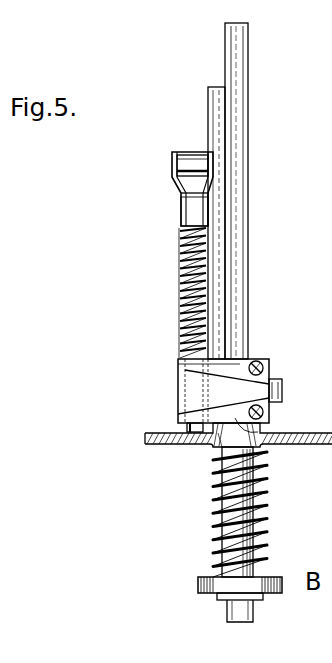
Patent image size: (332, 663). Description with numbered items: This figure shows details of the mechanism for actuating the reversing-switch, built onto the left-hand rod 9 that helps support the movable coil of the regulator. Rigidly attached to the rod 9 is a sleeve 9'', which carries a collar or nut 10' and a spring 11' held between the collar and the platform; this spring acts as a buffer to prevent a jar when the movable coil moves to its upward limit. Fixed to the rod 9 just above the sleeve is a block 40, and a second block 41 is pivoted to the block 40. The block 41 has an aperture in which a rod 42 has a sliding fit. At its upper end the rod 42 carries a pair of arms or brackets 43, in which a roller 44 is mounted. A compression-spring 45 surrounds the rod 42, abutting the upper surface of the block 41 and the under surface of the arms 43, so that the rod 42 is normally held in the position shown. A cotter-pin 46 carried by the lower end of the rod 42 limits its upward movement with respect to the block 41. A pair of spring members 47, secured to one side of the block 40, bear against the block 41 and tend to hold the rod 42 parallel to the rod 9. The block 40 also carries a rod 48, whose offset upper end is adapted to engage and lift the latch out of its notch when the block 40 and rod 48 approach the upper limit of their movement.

The rod 9 is at (250, 191).
The rod 48 is at (213, 111).
The arms or brackets 43 is at (205, 198).
The roller 44 is at (190, 156).
The rod 42 is at (192, 216).
The compression-spring 45 is at (182, 296).
The block 41 is at (180, 381).
The spring members 47 is at (238, 364).
The block 40 is at (255, 392).
The cotter-pin 46 is at (192, 428).
The sleeve 9'' is at (263, 512).
The spring 11' is at (219, 514).
The collar or nut 10' is at (222, 589).